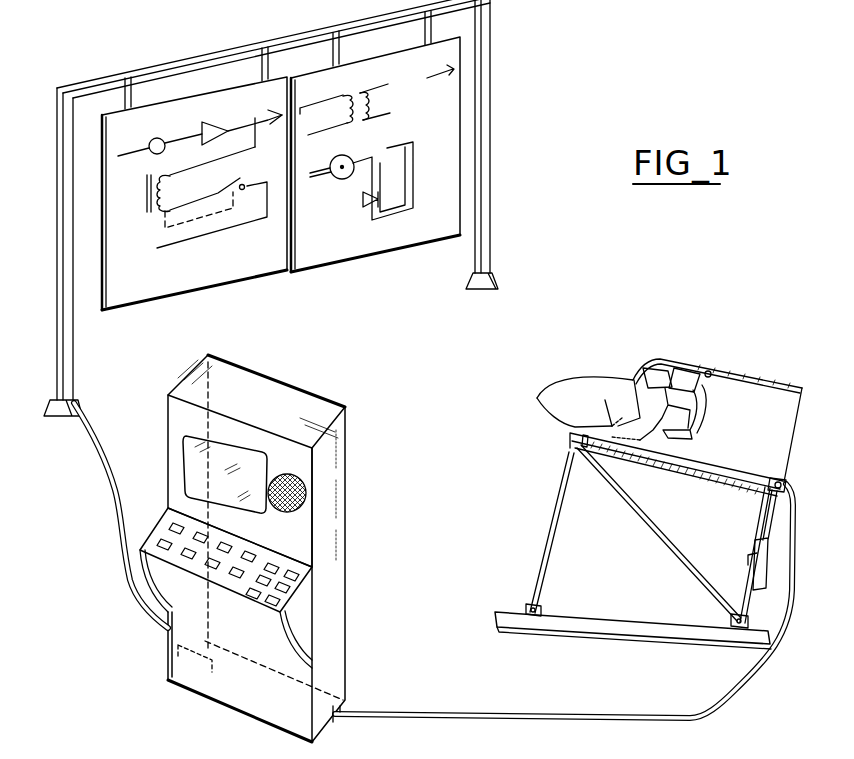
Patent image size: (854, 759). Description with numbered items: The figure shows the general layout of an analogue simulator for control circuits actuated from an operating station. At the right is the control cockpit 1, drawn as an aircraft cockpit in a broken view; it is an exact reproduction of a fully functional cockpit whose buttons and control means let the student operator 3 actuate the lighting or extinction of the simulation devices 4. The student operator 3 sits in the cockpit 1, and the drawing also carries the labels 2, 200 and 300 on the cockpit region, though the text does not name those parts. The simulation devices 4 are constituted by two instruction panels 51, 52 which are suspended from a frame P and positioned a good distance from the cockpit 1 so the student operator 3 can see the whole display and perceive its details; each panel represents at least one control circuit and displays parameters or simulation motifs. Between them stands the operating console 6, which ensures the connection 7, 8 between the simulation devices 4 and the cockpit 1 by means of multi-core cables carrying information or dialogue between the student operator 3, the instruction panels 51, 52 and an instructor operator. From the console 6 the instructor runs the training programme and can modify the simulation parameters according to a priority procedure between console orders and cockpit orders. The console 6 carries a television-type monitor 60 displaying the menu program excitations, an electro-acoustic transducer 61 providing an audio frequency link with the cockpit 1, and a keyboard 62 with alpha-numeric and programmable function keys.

The frame P is at (495, 50).
The instruction panel 51 is at (122, 277).
The instruction panel 52 is at (363, 240).
The simulation devices 4 is at (212, 124).
The operating console 6 is at (180, 420).
The television-type monitor 60 is at (192, 459).
The electro-acoustic transducer 61 is at (308, 490).
The keyboard 62 is at (295, 580).
The connection 7 is at (122, 518).
The connection 8 is at (482, 722).
The control cockpit 1 is at (722, 366).
The cockpit instrument 2 is at (660, 362).
The student operator 3 is at (703, 401).
The cockpit nose 200 is at (637, 378).
The sensor 300 is at (708, 370).